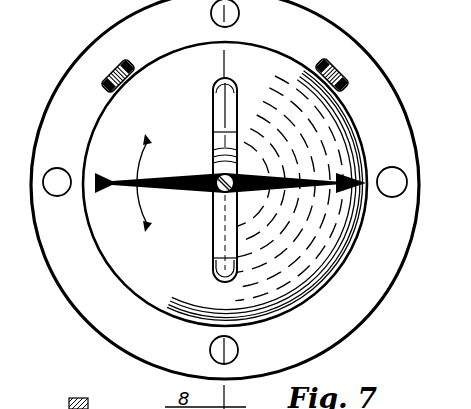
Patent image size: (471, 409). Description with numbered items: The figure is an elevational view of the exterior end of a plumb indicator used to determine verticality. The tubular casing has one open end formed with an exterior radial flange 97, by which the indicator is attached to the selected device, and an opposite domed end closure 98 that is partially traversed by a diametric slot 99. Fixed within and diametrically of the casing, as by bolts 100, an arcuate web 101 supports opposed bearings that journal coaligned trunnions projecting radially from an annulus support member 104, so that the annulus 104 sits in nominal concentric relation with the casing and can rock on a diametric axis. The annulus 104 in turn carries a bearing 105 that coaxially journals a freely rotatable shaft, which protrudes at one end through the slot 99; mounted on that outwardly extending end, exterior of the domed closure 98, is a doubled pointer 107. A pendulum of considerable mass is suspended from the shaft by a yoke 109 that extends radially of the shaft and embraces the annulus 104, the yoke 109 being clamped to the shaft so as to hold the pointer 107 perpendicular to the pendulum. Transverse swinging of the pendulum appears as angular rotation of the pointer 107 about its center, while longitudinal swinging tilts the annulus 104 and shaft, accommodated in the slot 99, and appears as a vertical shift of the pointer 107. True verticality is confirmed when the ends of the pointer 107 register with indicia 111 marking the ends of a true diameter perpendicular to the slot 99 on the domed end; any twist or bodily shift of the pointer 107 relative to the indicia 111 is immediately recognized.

The exterior radial flange 97 is at (173, 38).
The domed end closure 98 is at (299, 286).
The diametric slot 99 is at (237, 109).
The bolts 100 is at (129, 62).
The arcuate web 101 is at (217, 96).
The annulus support member 104 is at (236, 140).
The bearing 105 is at (214, 160).
The doubled pointer 107 is at (182, 194).
The yoke 109 is at (213, 222).
The indicia 111 is at (113, 160).